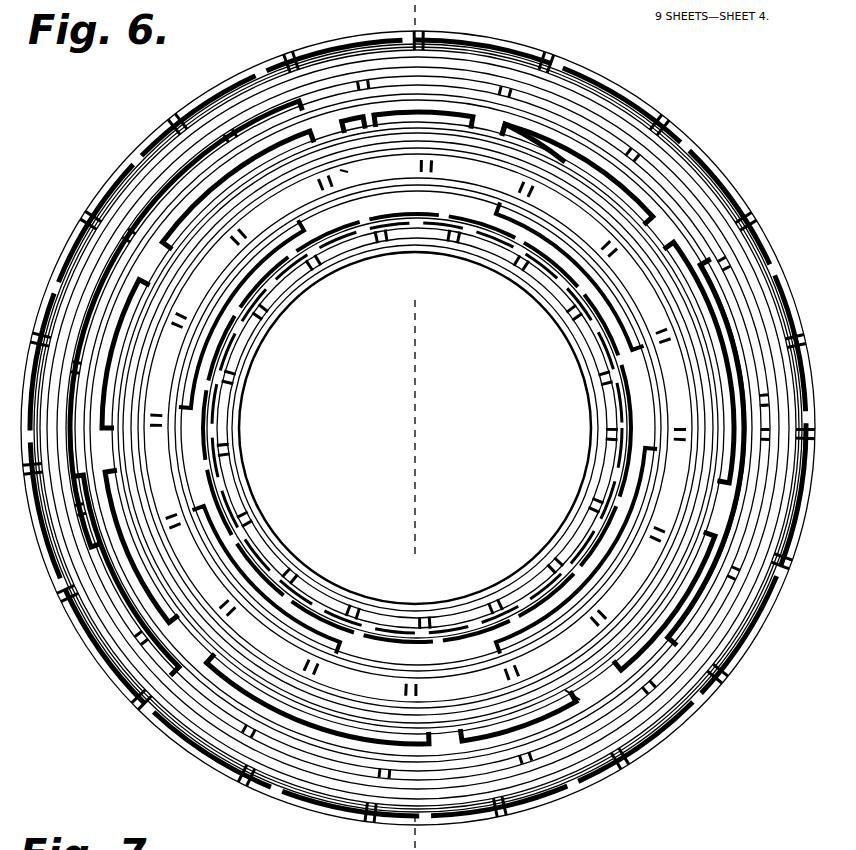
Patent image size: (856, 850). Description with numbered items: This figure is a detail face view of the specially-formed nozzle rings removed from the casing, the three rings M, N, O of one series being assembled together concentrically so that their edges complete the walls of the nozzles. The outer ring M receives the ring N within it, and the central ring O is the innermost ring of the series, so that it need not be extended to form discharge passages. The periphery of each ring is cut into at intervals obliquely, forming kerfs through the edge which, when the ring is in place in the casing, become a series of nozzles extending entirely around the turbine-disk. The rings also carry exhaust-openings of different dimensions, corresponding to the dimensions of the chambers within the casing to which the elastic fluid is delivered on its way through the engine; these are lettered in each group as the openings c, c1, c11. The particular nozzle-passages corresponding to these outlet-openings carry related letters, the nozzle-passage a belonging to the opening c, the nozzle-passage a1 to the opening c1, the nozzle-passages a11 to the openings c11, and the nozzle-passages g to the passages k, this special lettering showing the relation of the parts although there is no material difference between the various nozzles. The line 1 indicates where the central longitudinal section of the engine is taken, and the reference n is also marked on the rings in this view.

The nozzle-passage a is at (453, 36).
The nozzle-passage a1 is at (300, 53).
The nozzle-passage a11 is at (715, 176).
The exhaust-opening c is at (440, 86).
The exhaust-opening c1 is at (328, 90).
The exhaust-opening c11 is at (536, 105).
The passage k is at (343, 200).
The connecting strip n is at (348, 172).
The nozzle-passage g is at (595, 170).
The ring N is at (182, 447).
The central ring O is at (395, 612).
The section line 1 is at (425, 427).
The outer ring M is at (297, 842).